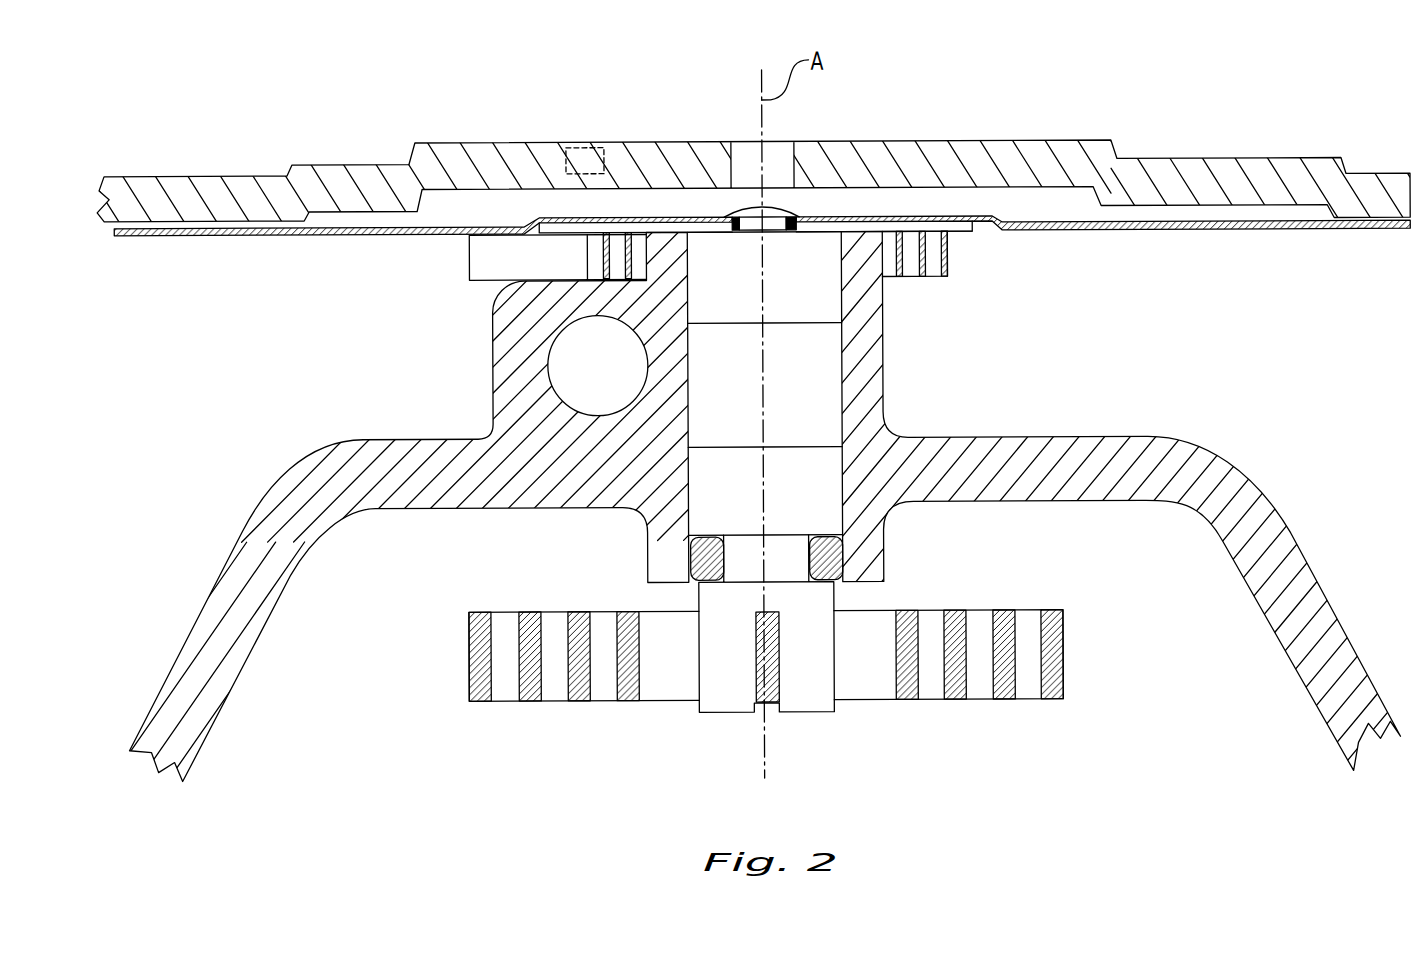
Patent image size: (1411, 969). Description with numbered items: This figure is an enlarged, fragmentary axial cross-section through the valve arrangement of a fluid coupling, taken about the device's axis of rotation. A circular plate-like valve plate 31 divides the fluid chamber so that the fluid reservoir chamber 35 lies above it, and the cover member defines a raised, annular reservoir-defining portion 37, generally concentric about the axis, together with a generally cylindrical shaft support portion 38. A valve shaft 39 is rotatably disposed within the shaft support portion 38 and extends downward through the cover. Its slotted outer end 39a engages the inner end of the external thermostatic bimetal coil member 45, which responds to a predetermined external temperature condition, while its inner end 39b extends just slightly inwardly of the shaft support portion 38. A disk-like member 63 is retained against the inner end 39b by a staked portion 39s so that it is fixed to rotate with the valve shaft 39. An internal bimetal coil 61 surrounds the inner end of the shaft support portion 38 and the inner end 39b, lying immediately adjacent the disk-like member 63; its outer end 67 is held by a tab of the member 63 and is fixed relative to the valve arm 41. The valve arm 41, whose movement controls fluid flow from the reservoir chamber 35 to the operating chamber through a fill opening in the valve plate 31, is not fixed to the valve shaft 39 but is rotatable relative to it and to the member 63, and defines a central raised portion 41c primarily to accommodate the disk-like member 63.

The valve plate 31 is at (477, 141).
The fluid reservoir chamber 35 is at (705, 513).
The reservoir-defining portion 37 is at (1310, 706).
The shaft support portion 38 is at (705, 513).
The valve shaft 39 is at (820, 428).
The outer end 39a is at (807, 693).
The inner end 39b is at (800, 273).
The staked portion 39s is at (753, 207).
The valve arm 41 is at (762, 183).
The central raised portion 41c is at (933, 215).
The thermostatic bimetal coil member 45 is at (468, 655).
The internal bimetal coil 61 is at (917, 276).
The disk-like member 63 is at (958, 237).
The outer end 67 is at (500, 262).